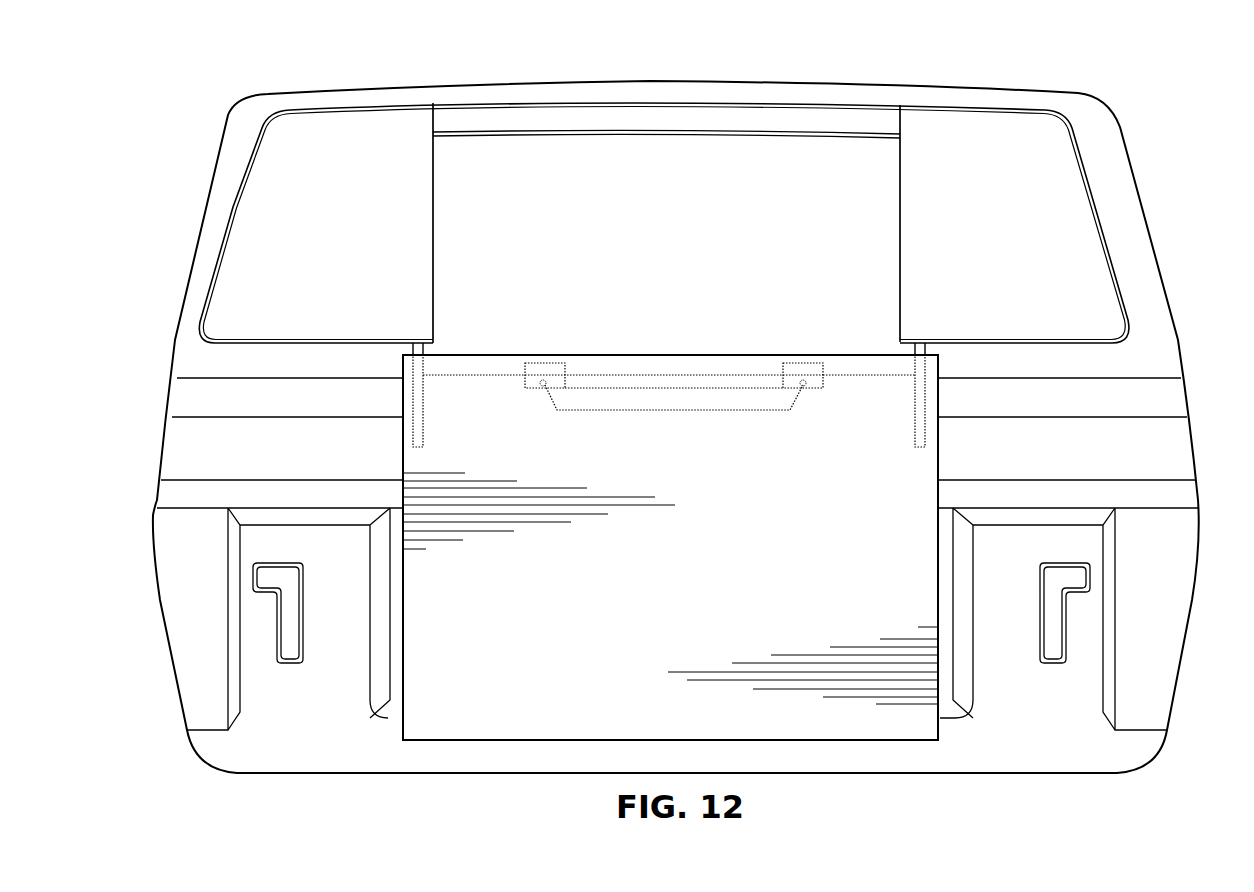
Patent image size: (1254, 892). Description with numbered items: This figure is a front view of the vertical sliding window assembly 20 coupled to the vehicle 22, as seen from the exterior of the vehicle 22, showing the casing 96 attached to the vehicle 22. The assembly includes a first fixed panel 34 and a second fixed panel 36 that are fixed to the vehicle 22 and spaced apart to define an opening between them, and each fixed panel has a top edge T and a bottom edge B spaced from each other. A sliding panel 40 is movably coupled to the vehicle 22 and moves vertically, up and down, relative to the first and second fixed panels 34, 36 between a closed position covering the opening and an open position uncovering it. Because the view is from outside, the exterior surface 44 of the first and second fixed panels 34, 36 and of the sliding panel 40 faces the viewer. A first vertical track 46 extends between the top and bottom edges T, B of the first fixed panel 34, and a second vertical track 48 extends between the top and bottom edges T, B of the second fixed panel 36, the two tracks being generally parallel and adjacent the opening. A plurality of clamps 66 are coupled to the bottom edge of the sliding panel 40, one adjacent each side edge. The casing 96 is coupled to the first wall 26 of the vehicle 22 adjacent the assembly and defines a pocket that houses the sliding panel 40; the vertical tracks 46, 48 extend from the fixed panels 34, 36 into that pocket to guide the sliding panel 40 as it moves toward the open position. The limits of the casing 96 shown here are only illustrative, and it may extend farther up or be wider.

The vertical sliding window assembly 20 is at (1090, 133).
The vehicle 22 is at (1210, 500).
The first wall 26 is at (1180, 455).
The first fixed panel 34 is at (255, 218).
The second fixed panel 36 is at (1097, 220).
The sliding panel 40 is at (835, 153).
The exterior surface 44 is at (669, 223).
The first vertical track 46 is at (424, 400).
The second vertical track 48 is at (912, 398).
The clamps 66 is at (533, 391).
The casing 96 is at (872, 740).
The top edge T is at (326, 99).
The bottom edge B is at (312, 362).